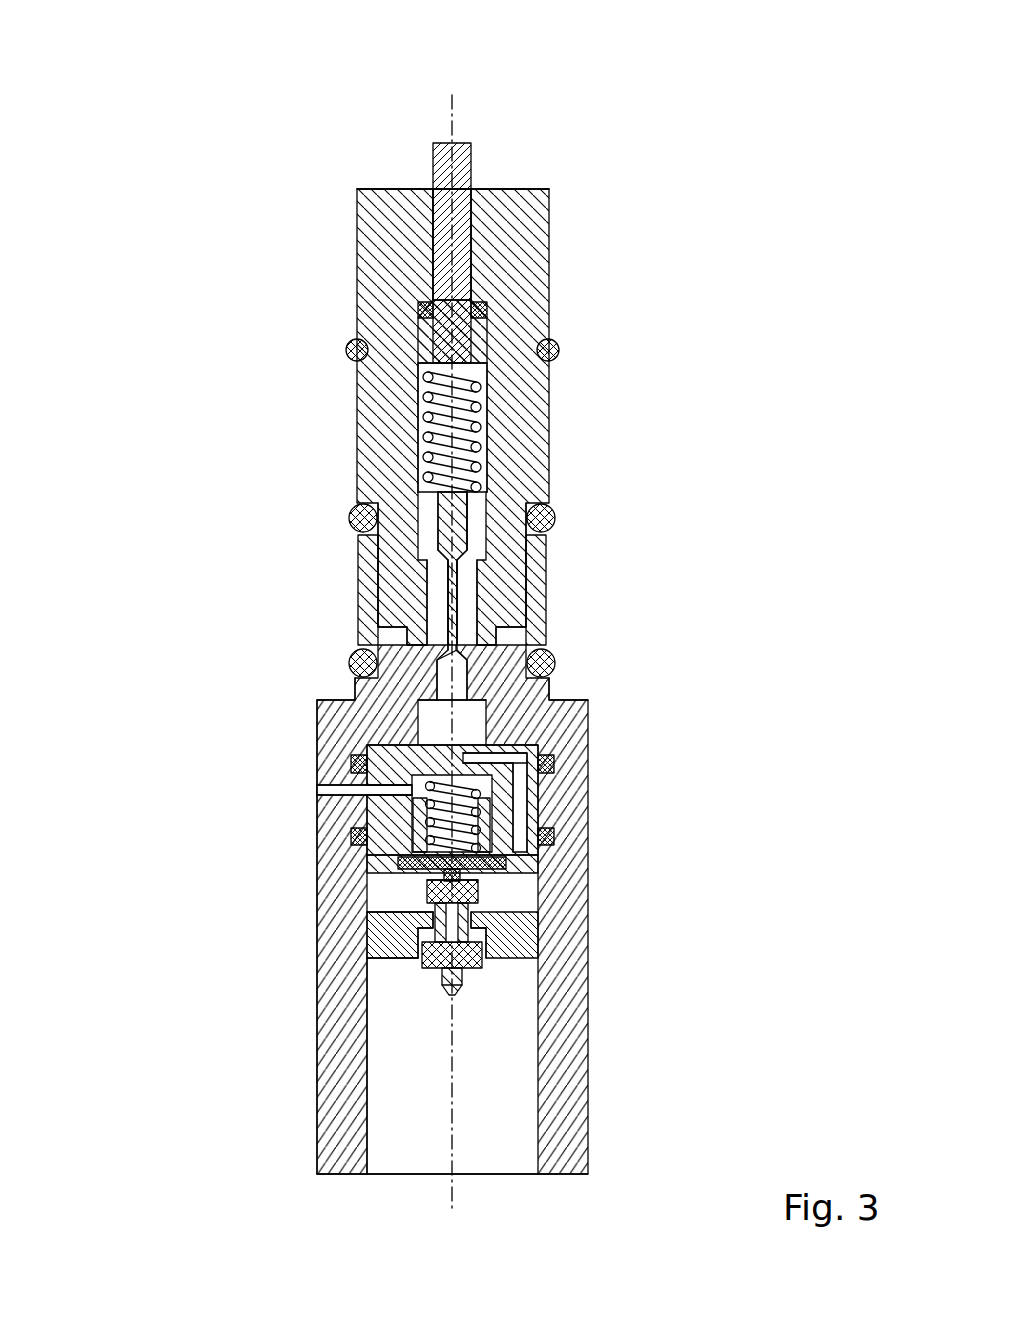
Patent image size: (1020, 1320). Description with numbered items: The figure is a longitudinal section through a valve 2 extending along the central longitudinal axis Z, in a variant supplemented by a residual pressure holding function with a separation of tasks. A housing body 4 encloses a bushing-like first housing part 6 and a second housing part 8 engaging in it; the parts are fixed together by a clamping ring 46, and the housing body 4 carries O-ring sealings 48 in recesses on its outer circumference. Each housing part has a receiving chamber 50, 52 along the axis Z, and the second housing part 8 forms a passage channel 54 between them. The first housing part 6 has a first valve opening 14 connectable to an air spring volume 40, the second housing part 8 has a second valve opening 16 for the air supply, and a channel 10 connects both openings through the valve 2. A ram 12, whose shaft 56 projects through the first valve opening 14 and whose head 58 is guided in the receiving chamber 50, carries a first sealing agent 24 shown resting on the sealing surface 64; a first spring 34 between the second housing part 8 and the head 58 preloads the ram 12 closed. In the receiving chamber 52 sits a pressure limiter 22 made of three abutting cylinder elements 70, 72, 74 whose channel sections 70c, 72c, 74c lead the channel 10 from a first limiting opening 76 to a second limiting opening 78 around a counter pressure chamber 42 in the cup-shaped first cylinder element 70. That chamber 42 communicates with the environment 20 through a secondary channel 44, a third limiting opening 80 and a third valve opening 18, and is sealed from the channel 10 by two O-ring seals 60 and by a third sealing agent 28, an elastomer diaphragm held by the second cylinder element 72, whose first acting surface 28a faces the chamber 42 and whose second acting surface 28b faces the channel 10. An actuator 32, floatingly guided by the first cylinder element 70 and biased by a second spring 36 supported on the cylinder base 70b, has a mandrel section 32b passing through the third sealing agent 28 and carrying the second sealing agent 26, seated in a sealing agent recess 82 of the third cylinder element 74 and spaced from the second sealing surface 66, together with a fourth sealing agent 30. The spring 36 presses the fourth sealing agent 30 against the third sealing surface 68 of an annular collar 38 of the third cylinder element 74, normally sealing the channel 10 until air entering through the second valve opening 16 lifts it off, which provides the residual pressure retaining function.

The valve 2 is at (357, 189).
The housing body 4 is at (357, 232).
The first housing part 6 is at (372, 283).
The second housing part 8 is at (355, 698).
The channel 10 is at (420, 435).
The ram 12 is at (473, 160).
The first valve opening 14 is at (473, 238).
The second valve opening 16 is at (545, 1125).
The third valve opening 18 is at (405, 790).
The environment 20 is at (118, 788).
The pressure limiter 22 is at (490, 975).
The first sealing agent 24 is at (487, 383).
The second sealing agent 26 is at (468, 1000).
The third sealing agent 28 is at (367, 878).
The first acting surface 28a is at (352, 838).
The second acting surface 28b is at (367, 950).
The fourth sealing agent 30 is at (400, 940).
The actuator 32 is at (548, 800).
The mandrel section 32b is at (535, 885).
The first spring 34 is at (480, 380).
The second spring 36 is at (550, 765).
The annular collar 38 is at (435, 925).
The air spring volume 40 is at (404, 38).
The counter pressure chamber 42 is at (362, 700).
The secondary channel 44 is at (372, 712).
The clamping ring 46 is at (485, 580).
The sealings 48 is at (346, 342).
The receiving chamber 50 is at (430, 428).
The receiving chamber 52 is at (348, 1050).
The passage channel 54 is at (490, 610).
The shaft 56 is at (487, 322).
The head 58 is at (485, 348).
The seals 60 is at (352, 760).
The sealing surface 64 is at (487, 318).
The second sealing surface 66 is at (430, 950).
The third sealing surface 68 is at (478, 895).
The first cylinder element 70 is at (505, 758).
The cylinder base 70b is at (380, 790).
The channel section 70c is at (492, 800).
The second cylinder element 72 is at (505, 862).
The channel section 72c is at (460, 872).
The third cylinder element 74 is at (488, 960).
The channel section 74c is at (470, 925).
The first limiting opening 76 is at (520, 790).
The second limiting opening 78 is at (418, 870).
The third limiting opening 80 is at (348, 797).
The sealing agent recess 82 is at (415, 970).
The central longitudinal axis Z is at (532, 20).